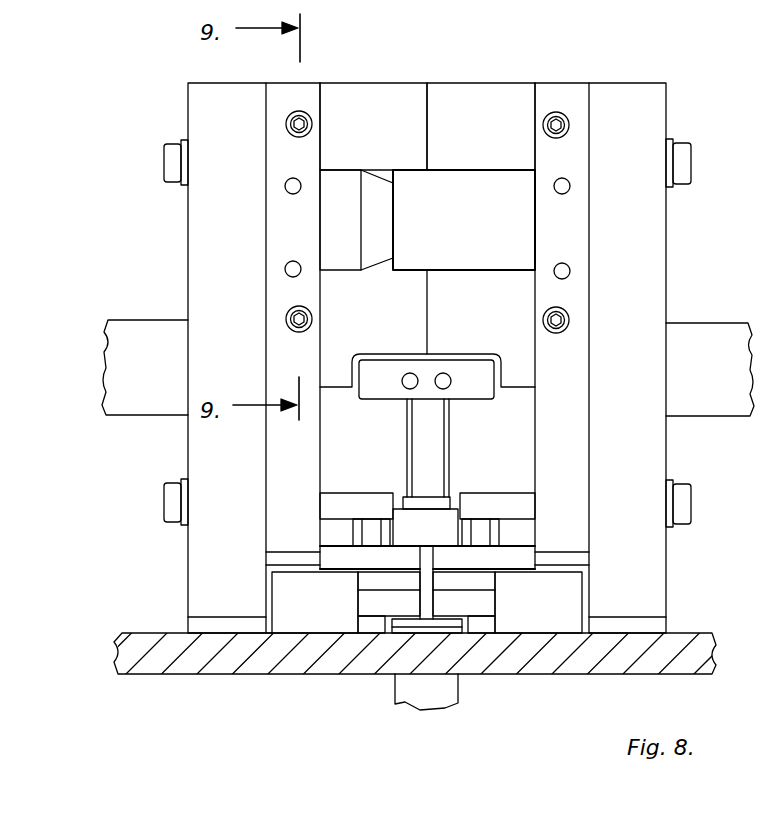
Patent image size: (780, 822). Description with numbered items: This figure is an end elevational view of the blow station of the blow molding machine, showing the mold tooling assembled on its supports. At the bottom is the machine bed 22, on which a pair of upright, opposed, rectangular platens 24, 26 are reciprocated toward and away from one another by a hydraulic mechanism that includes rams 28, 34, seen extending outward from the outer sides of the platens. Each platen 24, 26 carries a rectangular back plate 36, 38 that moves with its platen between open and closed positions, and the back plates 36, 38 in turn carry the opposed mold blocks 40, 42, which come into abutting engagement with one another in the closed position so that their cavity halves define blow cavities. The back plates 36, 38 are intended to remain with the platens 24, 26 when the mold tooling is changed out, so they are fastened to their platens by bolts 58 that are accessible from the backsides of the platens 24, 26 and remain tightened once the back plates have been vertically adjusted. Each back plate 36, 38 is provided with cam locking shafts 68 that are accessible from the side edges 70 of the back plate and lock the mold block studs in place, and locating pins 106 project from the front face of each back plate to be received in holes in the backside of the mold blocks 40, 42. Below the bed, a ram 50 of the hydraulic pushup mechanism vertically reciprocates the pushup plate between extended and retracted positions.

The bed 22 is at (513, 663).
The platen 24 is at (200, 128).
The platen 26 is at (648, 134).
The ram 28 is at (152, 330).
The ram 34 is at (712, 335).
The back plate 36 is at (310, 72).
The back plate 38 is at (572, 72).
The mold block 40 is at (410, 72).
The mold block 42 is at (514, 72).
The ram 50 is at (402, 693).
The bolt 58 is at (170, 172).
The cam locking shaft 68 is at (290, 124).
The side edge 70 is at (568, 430).
The locating pin 106 is at (779, 46).